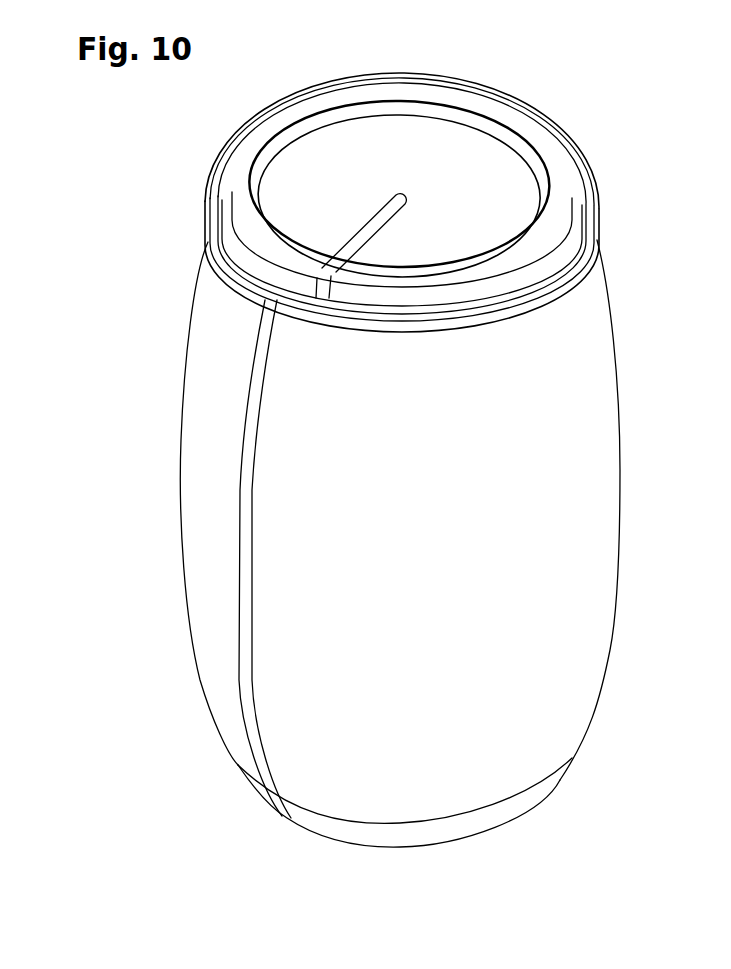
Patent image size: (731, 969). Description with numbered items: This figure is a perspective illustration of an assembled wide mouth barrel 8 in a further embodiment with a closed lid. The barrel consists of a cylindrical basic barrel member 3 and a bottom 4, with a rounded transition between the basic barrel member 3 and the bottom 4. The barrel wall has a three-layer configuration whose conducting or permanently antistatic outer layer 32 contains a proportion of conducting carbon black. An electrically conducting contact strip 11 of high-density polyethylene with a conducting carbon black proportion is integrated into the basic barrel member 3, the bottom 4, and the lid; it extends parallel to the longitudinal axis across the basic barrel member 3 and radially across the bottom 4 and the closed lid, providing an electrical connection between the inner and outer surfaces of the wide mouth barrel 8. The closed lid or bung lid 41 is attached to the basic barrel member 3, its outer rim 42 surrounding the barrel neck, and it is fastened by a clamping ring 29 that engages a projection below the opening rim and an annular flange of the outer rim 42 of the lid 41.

The wide mouth barrel 8 is at (636, 465).
The basic barrel member 3 is at (580, 561).
The bottom 4 is at (350, 845).
The electrically conducting contact strip 11 is at (375, 225).
The closed lid or bung lid 41 is at (458, 157).
The conducting or permanently antistatic outer layer 32 is at (280, 178).
The clamping ring 29 is at (600, 220).
The outer rim 42 is at (245, 247).